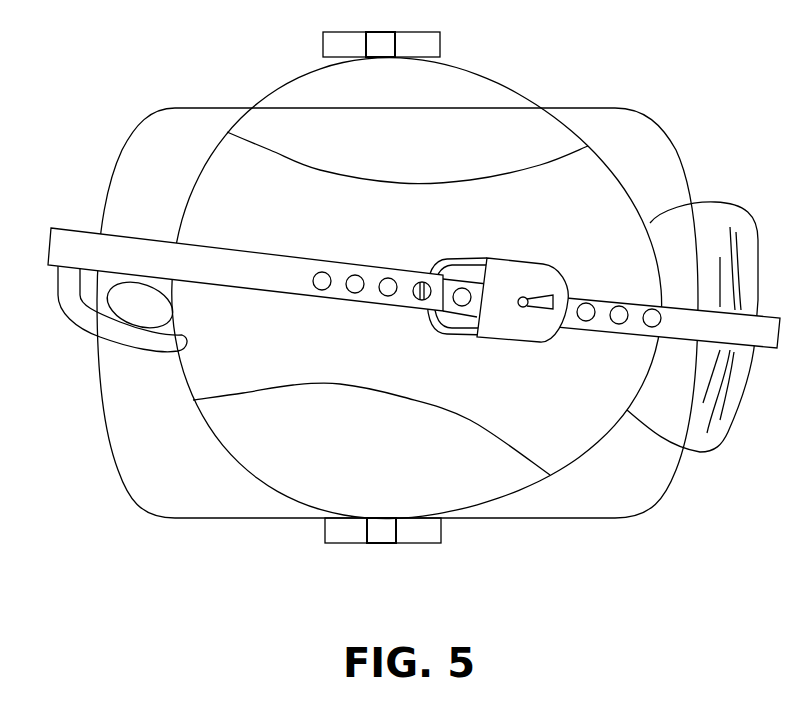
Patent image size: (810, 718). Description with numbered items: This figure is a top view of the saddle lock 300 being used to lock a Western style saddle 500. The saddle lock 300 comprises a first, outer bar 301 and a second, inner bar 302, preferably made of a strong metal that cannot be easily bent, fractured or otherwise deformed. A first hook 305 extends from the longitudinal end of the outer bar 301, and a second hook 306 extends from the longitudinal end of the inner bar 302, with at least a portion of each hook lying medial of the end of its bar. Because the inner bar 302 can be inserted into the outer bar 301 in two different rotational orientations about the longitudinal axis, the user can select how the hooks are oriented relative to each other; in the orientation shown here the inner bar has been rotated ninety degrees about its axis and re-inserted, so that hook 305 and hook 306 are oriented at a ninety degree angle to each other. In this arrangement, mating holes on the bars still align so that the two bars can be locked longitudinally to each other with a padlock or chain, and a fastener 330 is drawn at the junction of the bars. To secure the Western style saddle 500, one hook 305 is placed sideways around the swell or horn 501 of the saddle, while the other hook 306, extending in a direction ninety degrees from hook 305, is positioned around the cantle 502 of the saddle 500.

The saddle lock 300 is at (412, 304).
The first, outer bar 301 is at (213, 248).
The second, inner bar 302 is at (601, 320).
The first hook 305 is at (78, 307).
The second hook 306 is at (714, 330).
The buckle 330 is at (603, 300).
The Western style saddle 500 is at (455, 107).
The swell or horn 501 is at (150, 298).
The cantle 502 is at (727, 393).